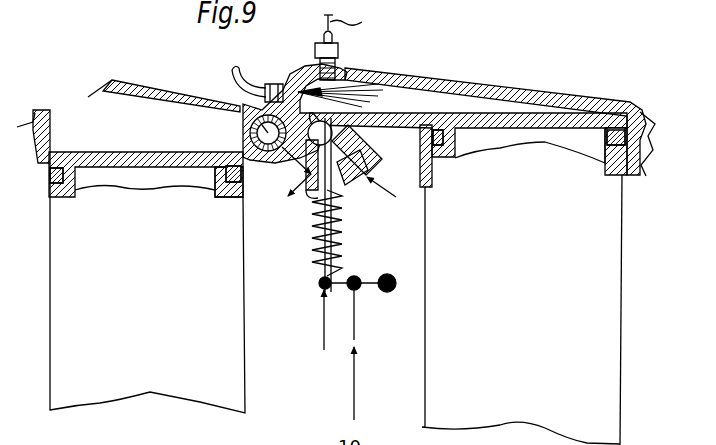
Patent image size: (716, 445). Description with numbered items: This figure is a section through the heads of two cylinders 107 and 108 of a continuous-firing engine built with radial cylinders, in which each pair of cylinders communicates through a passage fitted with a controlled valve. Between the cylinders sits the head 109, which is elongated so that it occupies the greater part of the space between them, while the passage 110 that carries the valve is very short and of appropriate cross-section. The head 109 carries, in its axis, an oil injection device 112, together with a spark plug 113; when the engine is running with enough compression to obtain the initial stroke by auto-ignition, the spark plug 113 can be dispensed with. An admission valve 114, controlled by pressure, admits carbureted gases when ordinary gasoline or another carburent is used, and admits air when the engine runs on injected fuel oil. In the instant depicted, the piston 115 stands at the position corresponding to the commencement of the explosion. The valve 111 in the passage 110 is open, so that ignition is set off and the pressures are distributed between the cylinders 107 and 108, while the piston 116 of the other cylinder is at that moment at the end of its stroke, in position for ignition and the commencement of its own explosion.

The cylinder 107 is at (147, 288).
The cylinder 108 is at (521, 285).
The head 109 is at (362, 100).
The passage 110 is at (243, 145).
The valve 111 is at (263, 160).
The oil injection device 112 is at (228, 52).
The spark plug 113 is at (318, 63).
The admission valve 114 is at (364, 168).
The piston 115 is at (165, 172).
The piston 116 is at (515, 123).